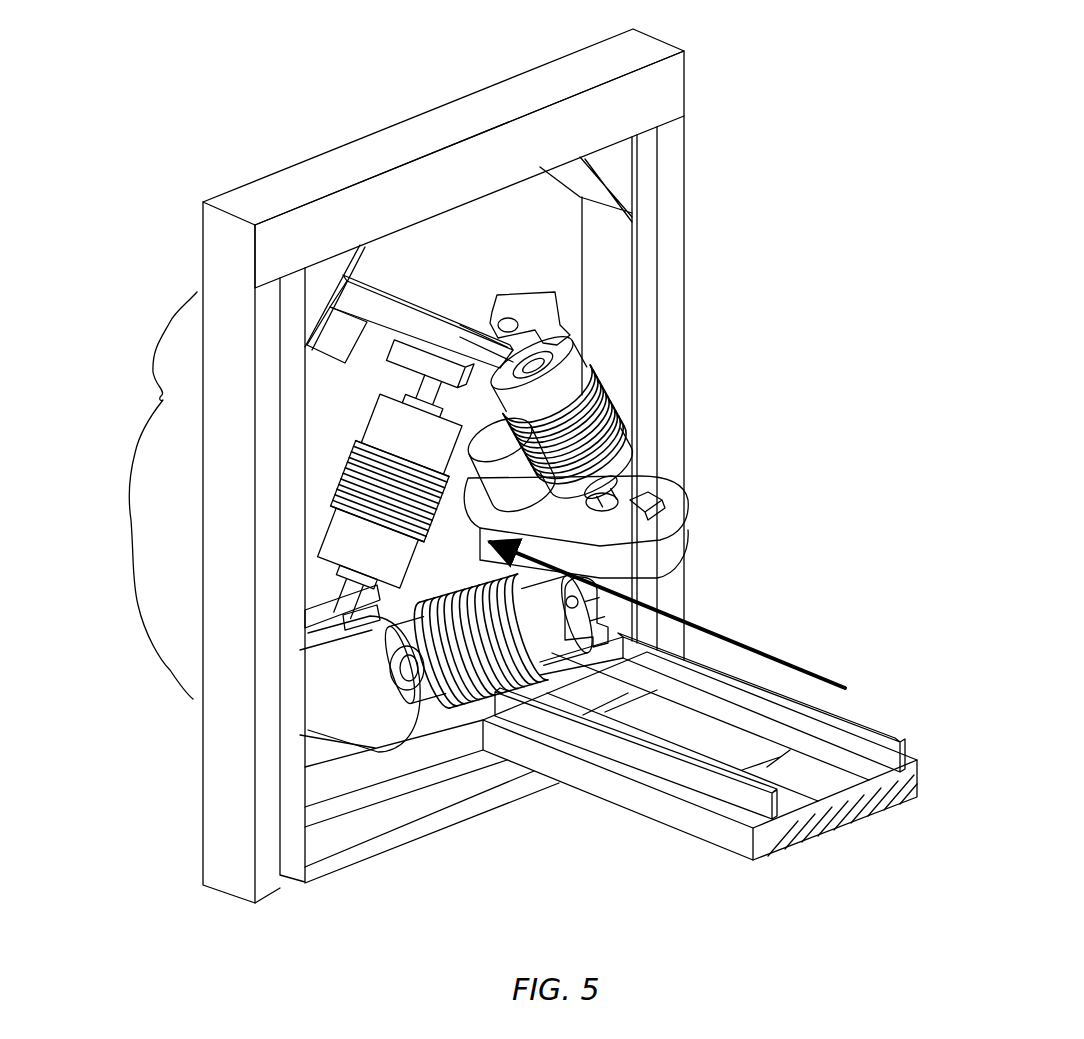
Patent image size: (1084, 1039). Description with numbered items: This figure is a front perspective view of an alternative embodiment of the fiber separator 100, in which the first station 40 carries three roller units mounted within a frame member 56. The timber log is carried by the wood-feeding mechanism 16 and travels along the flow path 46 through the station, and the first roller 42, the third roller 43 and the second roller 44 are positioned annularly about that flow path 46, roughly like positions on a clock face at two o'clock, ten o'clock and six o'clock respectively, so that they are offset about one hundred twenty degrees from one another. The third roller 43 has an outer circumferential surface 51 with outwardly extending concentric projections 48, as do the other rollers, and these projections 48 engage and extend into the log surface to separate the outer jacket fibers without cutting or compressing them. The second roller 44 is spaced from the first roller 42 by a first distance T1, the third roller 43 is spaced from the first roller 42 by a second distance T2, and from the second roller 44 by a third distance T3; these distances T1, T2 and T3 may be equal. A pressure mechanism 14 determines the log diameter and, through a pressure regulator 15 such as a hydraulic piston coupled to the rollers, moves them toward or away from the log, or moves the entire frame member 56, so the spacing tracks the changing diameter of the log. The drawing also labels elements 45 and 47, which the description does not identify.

The fiber separator 100 is at (183, 183).
The pressure mechanism 14 is at (365, 72).
The pressure regulator 15 is at (383, 312).
The wood-feeding mechanism 16 is at (862, 712).
The first station 40 is at (140, 412).
The first roller 42 is at (362, 416).
The third roller 43 is at (585, 356).
The second roller 44 is at (450, 708).
The piston rod 45 is at (392, 548).
The flow path 46 is at (750, 645).
The housing 47 is at (458, 678).
The concentric projections 48 is at (358, 458).
The outer circumferential surface 51 is at (618, 458).
The frame member 56 is at (292, 435).
The first distance T1 is at (397, 617).
The second distance T2 is at (465, 419).
The third distance T3 is at (542, 570).